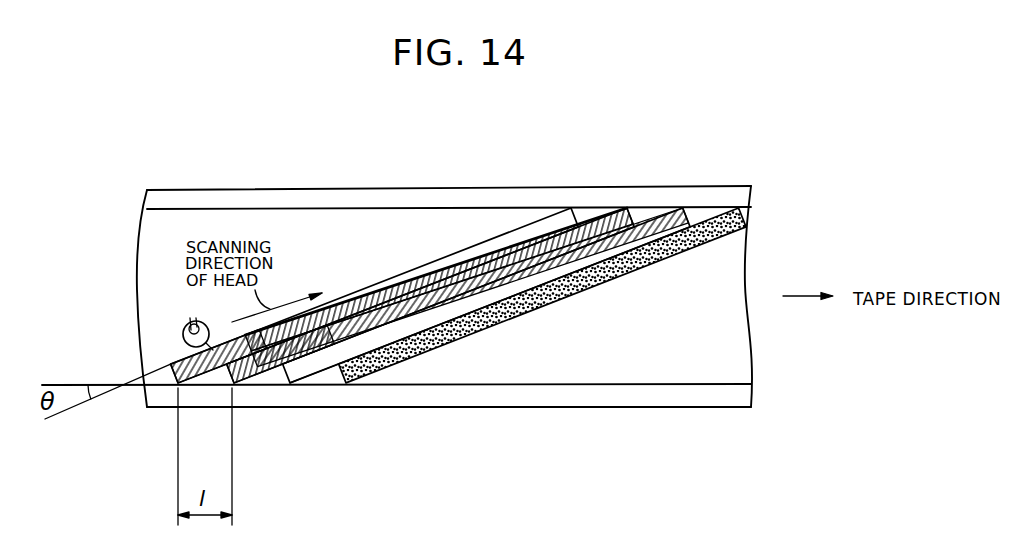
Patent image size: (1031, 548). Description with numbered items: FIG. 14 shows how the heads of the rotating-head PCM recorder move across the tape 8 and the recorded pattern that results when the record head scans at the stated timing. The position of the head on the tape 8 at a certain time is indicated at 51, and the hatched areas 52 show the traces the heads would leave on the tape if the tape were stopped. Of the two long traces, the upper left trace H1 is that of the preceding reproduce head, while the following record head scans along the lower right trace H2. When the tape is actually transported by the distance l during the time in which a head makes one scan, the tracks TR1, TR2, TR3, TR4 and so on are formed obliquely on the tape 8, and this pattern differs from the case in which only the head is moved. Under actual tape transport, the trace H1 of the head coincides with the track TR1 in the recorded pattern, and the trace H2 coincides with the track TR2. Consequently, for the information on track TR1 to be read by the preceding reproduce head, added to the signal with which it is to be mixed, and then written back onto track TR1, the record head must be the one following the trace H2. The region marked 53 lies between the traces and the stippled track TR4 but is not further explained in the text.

The tape 8 is at (172, 190).
The position of the head 51 is at (181, 336).
The hatched areas 52 is at (210, 368).
The track boundary portion 53 is at (315, 362).
The track TR1 is at (557, 218).
The track TR2 is at (613, 212).
The track TR3 is at (677, 210).
The track TR4 is at (727, 207).
The trace of the preceding reproduce head H1 is at (437, 271).
The trace of the following record head H2 is at (538, 278).